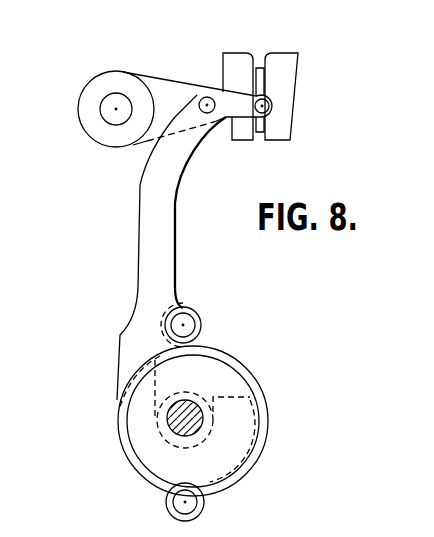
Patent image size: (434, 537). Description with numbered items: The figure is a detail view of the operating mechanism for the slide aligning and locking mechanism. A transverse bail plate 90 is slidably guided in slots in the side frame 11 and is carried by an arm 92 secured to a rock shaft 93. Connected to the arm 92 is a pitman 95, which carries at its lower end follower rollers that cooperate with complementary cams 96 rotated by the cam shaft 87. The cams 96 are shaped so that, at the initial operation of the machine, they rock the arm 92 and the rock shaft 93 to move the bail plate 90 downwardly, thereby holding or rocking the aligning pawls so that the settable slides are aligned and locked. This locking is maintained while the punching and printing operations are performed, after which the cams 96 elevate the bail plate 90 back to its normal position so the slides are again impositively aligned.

The side frame 11 is at (223, 68).
The bail plate 90 is at (262, 68).
The arm 92 is at (238, 107).
The rock shaft 93 is at (115, 110).
The pitman 95 is at (158, 220).
The cams 96 is at (225, 368).
The cam shaft 87 is at (183, 419).